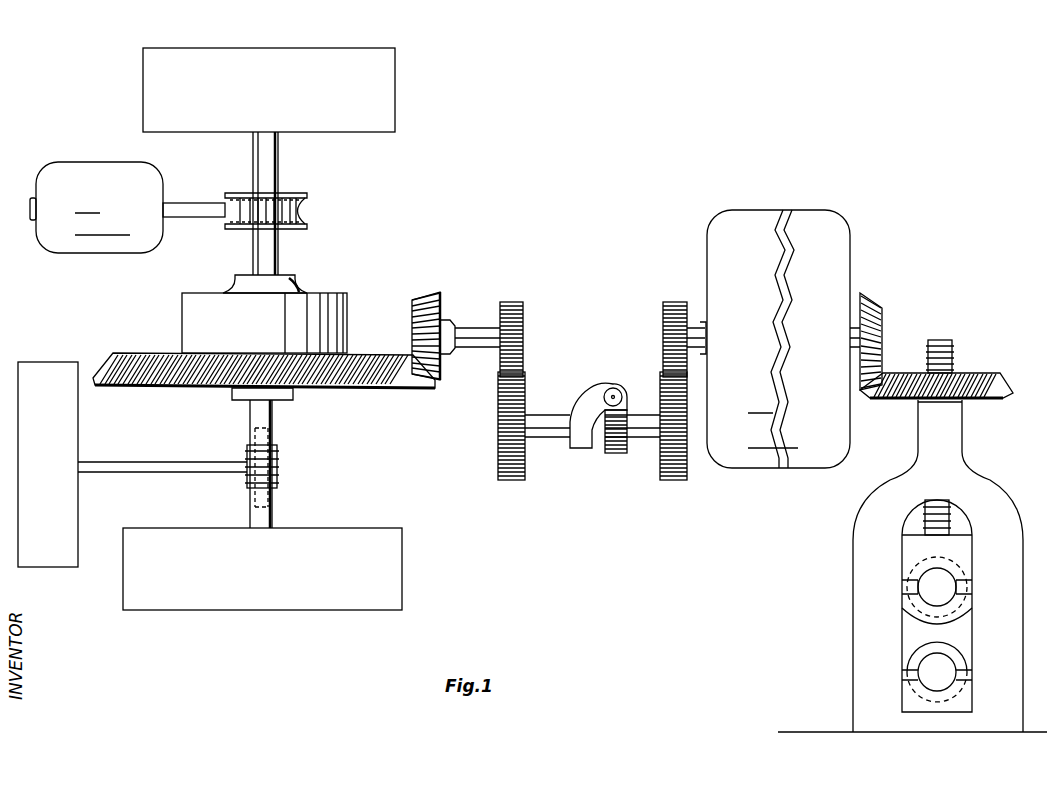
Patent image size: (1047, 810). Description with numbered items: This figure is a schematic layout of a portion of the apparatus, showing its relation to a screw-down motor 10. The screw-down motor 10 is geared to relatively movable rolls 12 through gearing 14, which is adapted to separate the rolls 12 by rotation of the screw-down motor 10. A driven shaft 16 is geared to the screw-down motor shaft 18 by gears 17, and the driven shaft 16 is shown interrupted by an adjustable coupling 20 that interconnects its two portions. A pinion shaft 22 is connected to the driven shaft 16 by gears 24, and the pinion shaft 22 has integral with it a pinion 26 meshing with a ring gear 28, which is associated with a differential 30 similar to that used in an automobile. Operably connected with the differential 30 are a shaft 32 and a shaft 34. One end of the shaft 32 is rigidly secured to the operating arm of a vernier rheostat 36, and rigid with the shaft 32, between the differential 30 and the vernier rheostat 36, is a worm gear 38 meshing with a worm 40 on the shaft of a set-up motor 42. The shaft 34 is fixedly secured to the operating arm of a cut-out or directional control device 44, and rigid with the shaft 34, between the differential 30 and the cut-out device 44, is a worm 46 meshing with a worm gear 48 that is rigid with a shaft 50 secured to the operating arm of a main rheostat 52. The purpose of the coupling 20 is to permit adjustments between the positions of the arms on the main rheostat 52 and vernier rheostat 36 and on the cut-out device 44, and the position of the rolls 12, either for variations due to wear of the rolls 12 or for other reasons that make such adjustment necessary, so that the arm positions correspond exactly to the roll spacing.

The screw-down motor 10 is at (843, 224).
The rolls 12 is at (972, 590).
The gearing 14 is at (882, 355).
The driven shaft 16 is at (555, 420).
The gears 17 is at (662, 378).
The screw-down motor shaft 18 is at (691, 326).
The adjustable coupling 20 is at (606, 386).
The pinion shaft 22 is at (470, 326).
The gears 24 is at (524, 366).
The pinion 26 is at (414, 300).
The ring gear 28 is at (384, 358).
The differential 30 is at (352, 286).
The shaft 32 is at (278, 248).
The shaft 34 is at (274, 418).
The vernier rheostat 36 is at (385, 78).
The worm gear 38 is at (308, 197).
The worm 40 is at (242, 228).
The set-up motor 42 is at (107, 163).
The cut-out or directional control device 44 is at (390, 568).
The worm 46 is at (280, 480).
The worm gear 48 is at (255, 432).
The shaft 50 is at (188, 462).
The main rheostat 52 is at (56, 362).